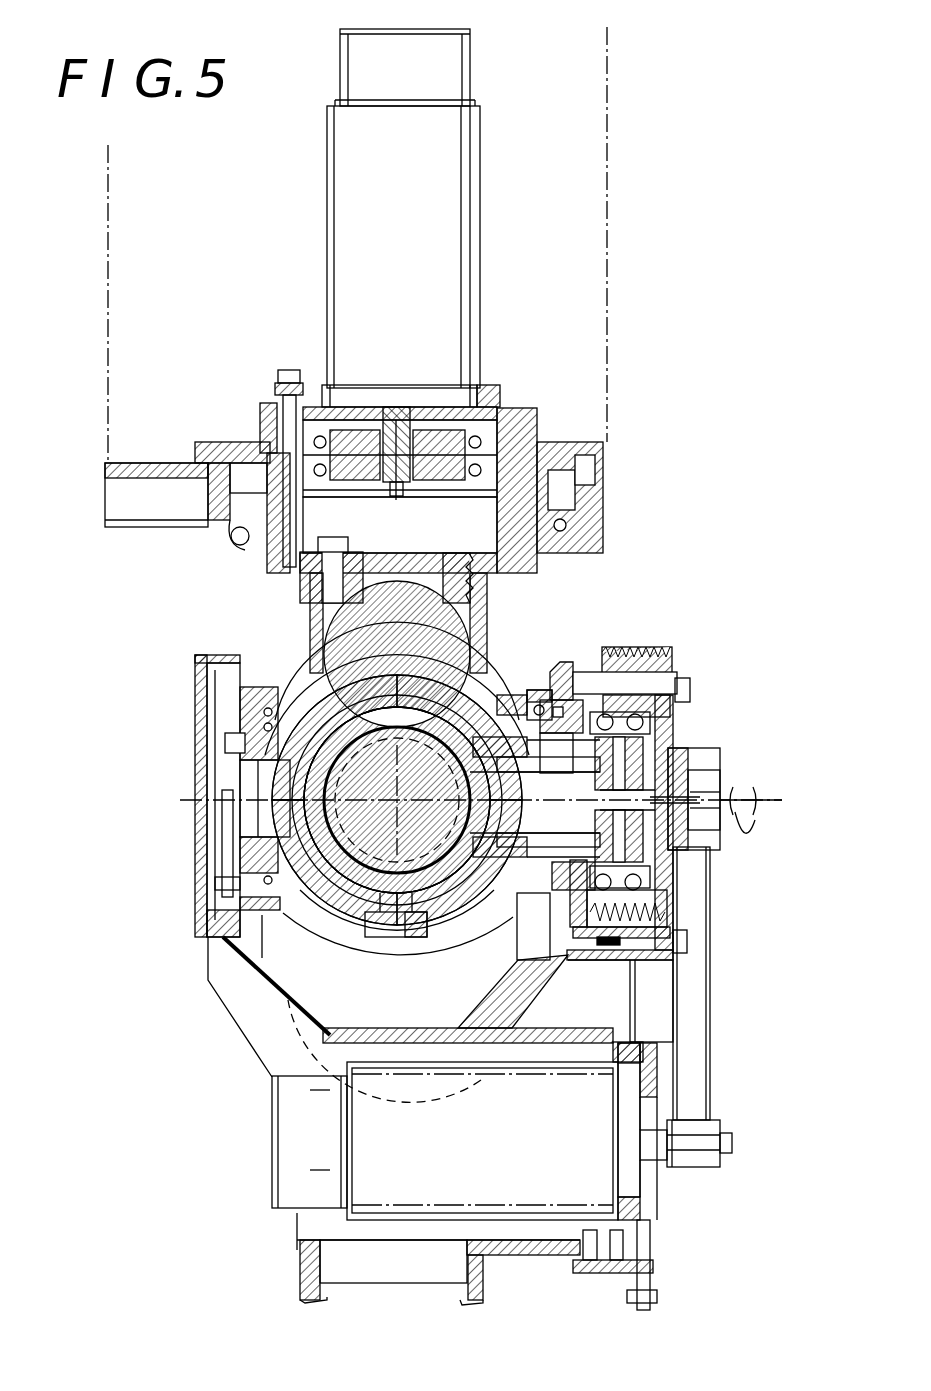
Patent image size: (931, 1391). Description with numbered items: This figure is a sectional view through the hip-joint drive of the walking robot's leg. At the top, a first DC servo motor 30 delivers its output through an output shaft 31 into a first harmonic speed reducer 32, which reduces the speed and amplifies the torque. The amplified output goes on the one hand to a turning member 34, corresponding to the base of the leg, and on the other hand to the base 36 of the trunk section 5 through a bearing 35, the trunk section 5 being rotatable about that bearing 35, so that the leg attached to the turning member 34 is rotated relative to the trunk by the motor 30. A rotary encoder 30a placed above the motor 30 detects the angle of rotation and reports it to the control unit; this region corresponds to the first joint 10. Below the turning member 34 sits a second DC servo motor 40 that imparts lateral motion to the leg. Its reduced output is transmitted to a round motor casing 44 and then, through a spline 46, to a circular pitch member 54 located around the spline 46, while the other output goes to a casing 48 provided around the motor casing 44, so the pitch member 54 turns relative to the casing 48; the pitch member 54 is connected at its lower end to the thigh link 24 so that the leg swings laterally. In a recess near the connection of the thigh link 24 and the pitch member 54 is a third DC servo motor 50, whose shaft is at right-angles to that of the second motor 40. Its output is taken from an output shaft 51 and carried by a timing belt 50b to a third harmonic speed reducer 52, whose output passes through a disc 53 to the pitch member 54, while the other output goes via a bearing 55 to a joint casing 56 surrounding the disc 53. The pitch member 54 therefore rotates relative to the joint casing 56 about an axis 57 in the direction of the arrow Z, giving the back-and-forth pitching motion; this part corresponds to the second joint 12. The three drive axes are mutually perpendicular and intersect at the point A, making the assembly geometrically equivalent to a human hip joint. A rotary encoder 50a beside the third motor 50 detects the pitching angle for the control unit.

The trunk section 5 is at (605, 259).
The first joint 10 is at (550, 377).
The second joint 12 is at (707, 662).
The thigh link 24 is at (304, 1277).
The DC servo motor 30 is at (445, 228).
The rotary encoder 30a is at (448, 79).
The output shaft 31 is at (393, 430).
The first harmonic speed reducer 32 is at (498, 382).
The turning member 34 is at (495, 535).
The bearing 35 is at (233, 537).
The base 36 is at (132, 460).
The second DC servo motor 40 is at (440, 838).
The motor casing 44 is at (452, 880).
The spline 46 is at (457, 873).
The casing 48 is at (327, 627).
The third DC servo motor 50 is at (525, 1136).
The rotary encoder 50a is at (291, 1180).
The timing belt 50b is at (709, 1059).
The output shaft 51 is at (652, 1140).
The third harmonic speed reducer 52 is at (682, 733).
The disc 53 is at (533, 813).
The pitch member 54 is at (498, 700).
The bearing 55 is at (530, 700).
The joint casing 56 is at (565, 662).
The axis 57 is at (778, 793).
The point A is at (407, 792).
The arrow z Z is at (751, 829).